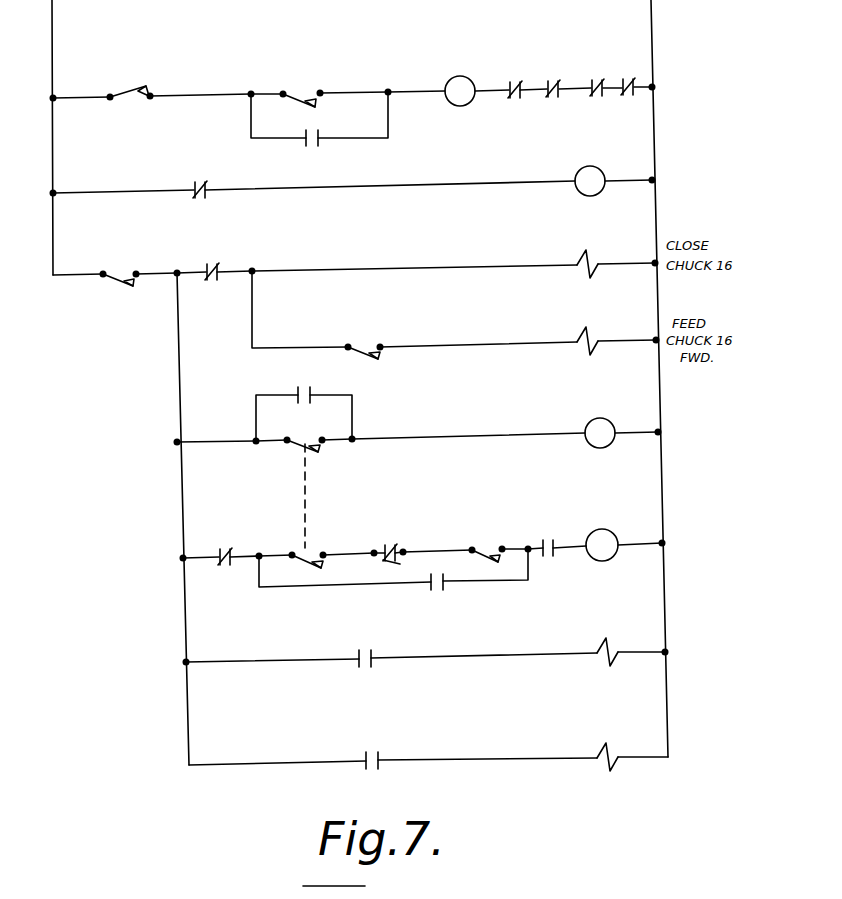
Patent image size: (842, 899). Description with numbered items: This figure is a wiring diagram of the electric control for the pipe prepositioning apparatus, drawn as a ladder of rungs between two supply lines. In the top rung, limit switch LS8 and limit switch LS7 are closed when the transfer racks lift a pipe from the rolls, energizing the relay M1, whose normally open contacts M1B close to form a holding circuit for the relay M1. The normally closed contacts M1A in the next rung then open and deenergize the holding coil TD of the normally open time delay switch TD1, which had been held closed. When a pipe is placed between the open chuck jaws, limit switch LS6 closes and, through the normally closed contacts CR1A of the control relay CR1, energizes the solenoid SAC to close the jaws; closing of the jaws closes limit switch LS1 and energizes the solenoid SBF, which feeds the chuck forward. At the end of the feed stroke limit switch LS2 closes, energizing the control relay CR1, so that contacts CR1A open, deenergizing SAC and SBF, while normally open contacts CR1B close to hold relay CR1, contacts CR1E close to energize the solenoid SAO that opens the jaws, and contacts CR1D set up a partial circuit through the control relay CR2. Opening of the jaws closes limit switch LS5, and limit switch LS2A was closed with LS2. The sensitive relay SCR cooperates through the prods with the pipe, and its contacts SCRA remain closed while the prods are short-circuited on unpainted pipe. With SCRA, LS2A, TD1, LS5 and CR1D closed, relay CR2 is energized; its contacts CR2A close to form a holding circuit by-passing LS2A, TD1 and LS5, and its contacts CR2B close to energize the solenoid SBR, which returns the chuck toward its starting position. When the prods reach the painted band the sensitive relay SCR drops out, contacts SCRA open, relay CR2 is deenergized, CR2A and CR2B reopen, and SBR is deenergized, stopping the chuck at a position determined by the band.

The limit switch LS8 is at (137, 91).
The limit switch LS7 is at (317, 75).
The normally open contacts M1B is at (322, 143).
The relay M1 is at (472, 81).
The normally closed contacts M1A is at (199, 179).
The holding coil TD is at (597, 167).
The limit switch LS6 is at (121, 272).
The normally closed contacts CR1A is at (205, 268).
The solenoid SAC is at (612, 238).
The limit switch LS1 is at (345, 338).
The solenoid SBF is at (612, 315).
The normally open contacts CR1B is at (312, 385).
The limit switch LS2 is at (305, 436).
The control relay CR1 is at (618, 400).
The sensitive relay SCR is at (220, 555).
The contacts SCRA is at (222, 568).
The limit switch LS2A is at (309, 551).
The time delay switch TD1 is at (393, 540).
The limit switch LS5 is at (484, 545).
The normally open contacts CR1D is at (553, 538).
The control relay CR2 is at (616, 535).
The contacts CR2A is at (440, 592).
The normally open contacts CR1E is at (355, 650).
The solenoid SAO is at (630, 624).
The normally open contacts CR2B is at (372, 750).
The solenoid SBR is at (630, 728).